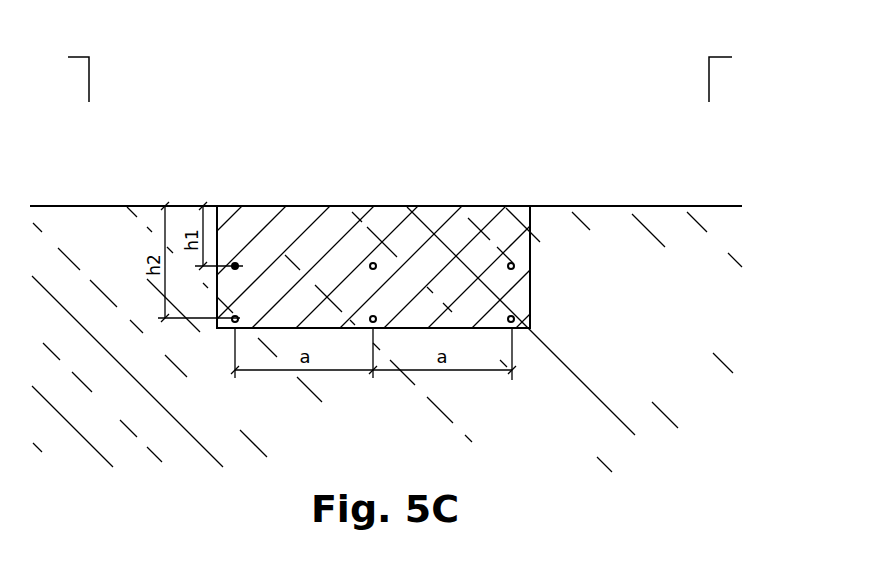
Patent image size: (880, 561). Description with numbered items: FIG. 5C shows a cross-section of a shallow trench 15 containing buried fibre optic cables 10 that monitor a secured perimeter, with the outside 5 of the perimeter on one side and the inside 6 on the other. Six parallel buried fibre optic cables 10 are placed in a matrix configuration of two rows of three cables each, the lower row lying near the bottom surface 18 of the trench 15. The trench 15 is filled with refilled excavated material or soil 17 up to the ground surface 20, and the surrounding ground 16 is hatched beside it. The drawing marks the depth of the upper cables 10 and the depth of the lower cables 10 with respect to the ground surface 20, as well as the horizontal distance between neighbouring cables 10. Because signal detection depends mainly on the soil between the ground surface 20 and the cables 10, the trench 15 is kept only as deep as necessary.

The outside 5 is at (720, 68).
The inside 6 is at (78, 68).
The buried fibre optic cable 10 is at (236, 266).
The shallow trench 15 is at (458, 245).
The ground soil 16 is at (602, 285).
The refilled excavated material or soil 17 is at (232, 206).
The bottom surface 18 is at (303, 328).
The ground surface 20 is at (578, 206).